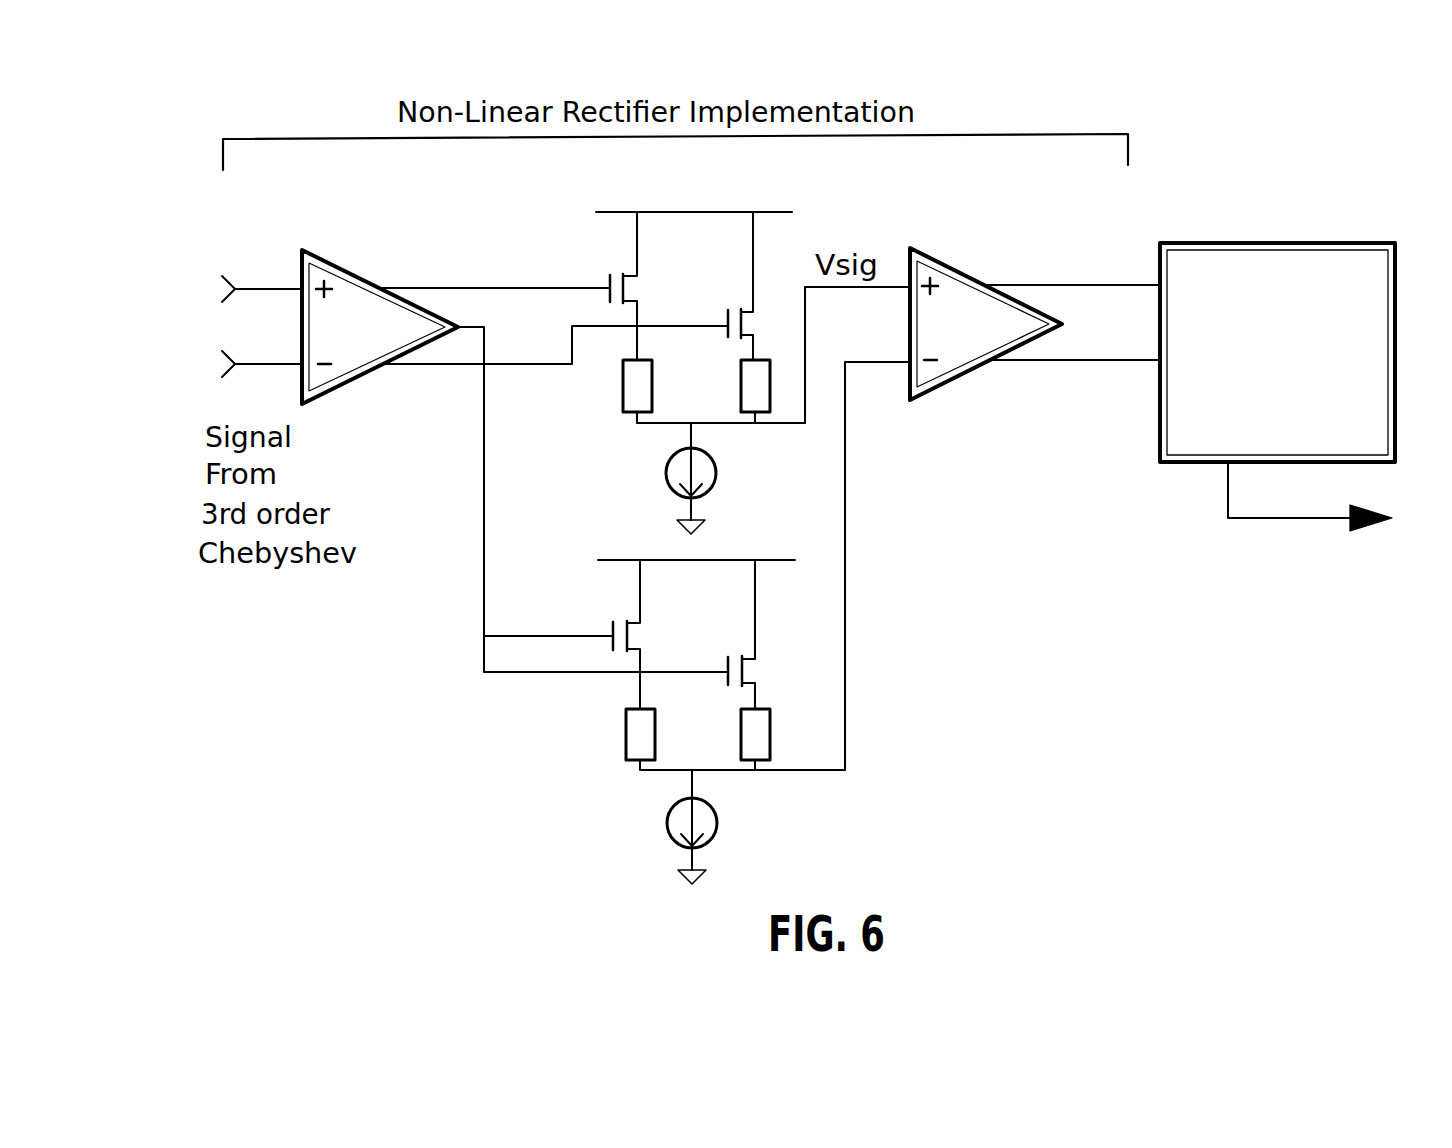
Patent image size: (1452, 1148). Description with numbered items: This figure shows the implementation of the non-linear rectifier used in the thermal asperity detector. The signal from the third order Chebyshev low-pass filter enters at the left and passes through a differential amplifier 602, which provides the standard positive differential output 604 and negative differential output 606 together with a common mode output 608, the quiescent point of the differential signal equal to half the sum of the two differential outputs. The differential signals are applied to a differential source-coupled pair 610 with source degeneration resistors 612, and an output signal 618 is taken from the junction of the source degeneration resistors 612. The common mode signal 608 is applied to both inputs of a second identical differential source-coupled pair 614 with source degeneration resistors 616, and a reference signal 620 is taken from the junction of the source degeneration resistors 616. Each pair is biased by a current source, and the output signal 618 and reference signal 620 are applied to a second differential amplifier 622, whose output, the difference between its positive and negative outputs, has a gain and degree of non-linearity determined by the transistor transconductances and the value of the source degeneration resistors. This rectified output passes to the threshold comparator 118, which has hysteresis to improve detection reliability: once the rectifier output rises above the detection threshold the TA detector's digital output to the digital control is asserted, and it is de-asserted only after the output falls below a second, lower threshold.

The differential amplifier 602 is at (322, 258).
The differential output V1+ 604 is at (458, 288).
The differential output V1- 606 is at (393, 366).
The common mode output Vcm 608 is at (483, 512).
The differential source-coupled pair 610 is at (692, 212).
The source degeneration resistors 612 is at (623, 385).
The second differential source-coupled pair 614 is at (615, 560).
The source degeneration resistors 616 is at (627, 743).
The output signal Vsig 618 is at (887, 283).
The reference signal Vref 620 is at (845, 513).
The second differential amplifier 622 is at (937, 387).
The threshold comparator 118 is at (1275, 243).